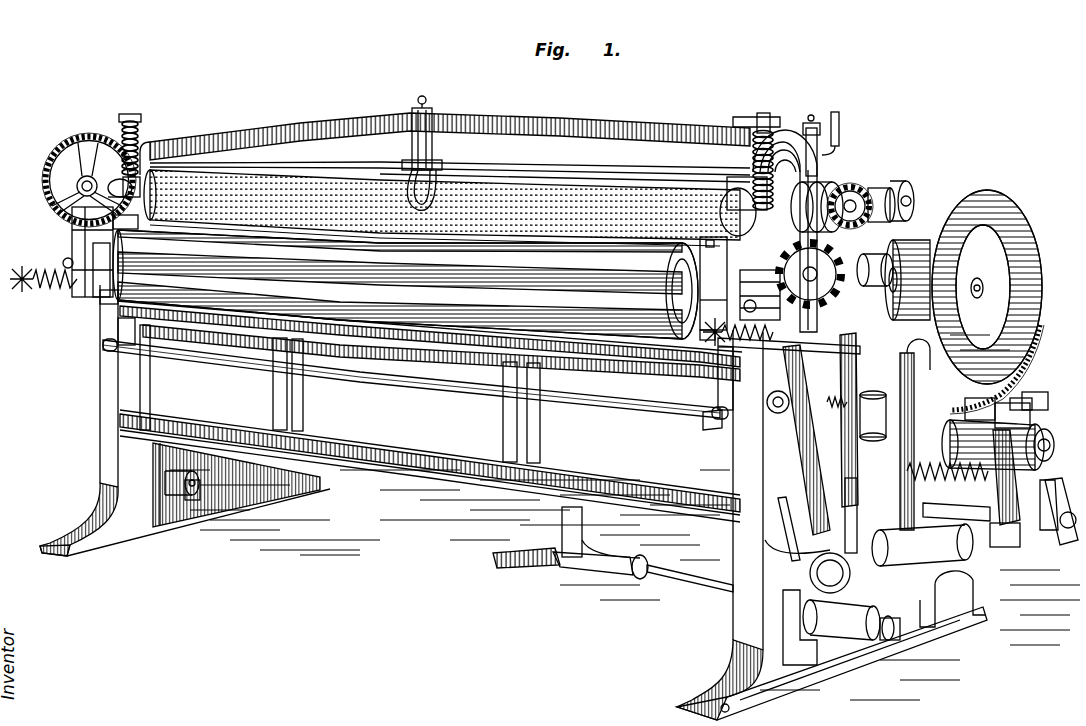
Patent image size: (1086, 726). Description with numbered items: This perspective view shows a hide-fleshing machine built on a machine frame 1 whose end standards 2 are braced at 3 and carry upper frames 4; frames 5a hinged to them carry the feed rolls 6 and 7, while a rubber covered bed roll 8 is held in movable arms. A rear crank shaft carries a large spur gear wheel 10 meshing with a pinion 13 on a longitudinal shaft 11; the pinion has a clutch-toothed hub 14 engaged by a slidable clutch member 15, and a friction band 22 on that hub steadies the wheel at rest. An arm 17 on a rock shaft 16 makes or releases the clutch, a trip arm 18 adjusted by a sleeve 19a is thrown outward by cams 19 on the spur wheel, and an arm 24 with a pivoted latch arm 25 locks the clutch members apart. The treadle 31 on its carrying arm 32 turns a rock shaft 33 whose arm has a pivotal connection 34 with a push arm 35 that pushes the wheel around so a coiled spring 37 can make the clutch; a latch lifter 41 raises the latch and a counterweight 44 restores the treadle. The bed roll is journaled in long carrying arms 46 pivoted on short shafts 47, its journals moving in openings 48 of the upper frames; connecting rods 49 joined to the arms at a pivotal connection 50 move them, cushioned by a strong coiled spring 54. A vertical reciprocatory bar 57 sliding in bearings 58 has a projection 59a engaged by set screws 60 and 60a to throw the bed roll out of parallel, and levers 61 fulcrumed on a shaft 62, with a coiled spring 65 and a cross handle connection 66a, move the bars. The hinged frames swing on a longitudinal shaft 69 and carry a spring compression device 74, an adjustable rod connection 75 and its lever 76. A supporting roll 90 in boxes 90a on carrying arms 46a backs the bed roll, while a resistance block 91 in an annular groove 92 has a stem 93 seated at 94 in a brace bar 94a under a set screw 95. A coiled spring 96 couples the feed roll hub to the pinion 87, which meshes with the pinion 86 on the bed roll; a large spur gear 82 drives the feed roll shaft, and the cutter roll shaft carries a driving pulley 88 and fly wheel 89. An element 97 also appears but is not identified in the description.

The machine frame 1 is at (100, 470).
The end standards 2 is at (100, 393).
The longitudinal brace 3 is at (450, 482).
The upper frames 4 is at (80, 252).
The hinged frames 5a is at (810, 182).
The feed roll 6 is at (205, 172).
The feed roll 7 is at (232, 231).
The rubber covered bed roll 8 is at (117, 335).
The spur gear wheel 10 is at (1036, 345).
The longitudinal shaft 11 is at (1048, 444).
The pinion 13 is at (993, 445).
The clutch-toothed hub 14 is at (965, 484).
The slidable clutch member 15 is at (1040, 422).
The rock shaft 16 is at (1066, 535).
The arm 17 is at (1008, 530).
The trip arm 18 is at (1008, 403).
The cams 19 is at (978, 397).
The sleeve 19a is at (1050, 550).
The friction band 22 is at (1028, 410).
The arm 24 is at (950, 556).
The latch arm 25 is at (800, 505).
The treadle 31 is at (520, 570).
The carrying arm 32 is at (598, 575).
The rock shaft 33 is at (690, 578).
The pivotal connection 34 is at (900, 640).
The push arm 35 is at (880, 645).
The coiled spring 37 is at (956, 514).
The latch lifter 41 is at (850, 540).
The counterweight 44 is at (902, 355).
The carrying arms 46 is at (843, 400).
The carrying arms 46a is at (163, 483).
The short shafts 47 is at (197, 500).
The openings 48 is at (106, 220).
The connecting rods 49 is at (916, 310).
The pivotal connection 50 is at (722, 416).
The coiled spring 54 is at (42, 285).
The vertical reciprocatory bar 57 is at (805, 470).
The sliding bearings 58 is at (827, 537).
The projection 59a is at (868, 262).
The set screw 60 is at (62, 263).
The set screw 60a is at (726, 258).
The levers 61 is at (104, 346).
The shaft 62 is at (772, 410).
The coiled spring 65 is at (840, 402).
The cross handle connection 66a is at (436, 390).
The longitudinal shaft 69 is at (910, 200).
The spring compression device 74 is at (122, 135).
The adjustable pivotal rod connection 75 is at (812, 127).
The lever 76 is at (838, 146).
The large spur gear 82 is at (66, 146).
The pinion 86 is at (718, 390).
The pinion 87 is at (860, 196).
The driving pulley 88 is at (905, 272).
The fly wheel 89 is at (988, 205).
The supporting roll 90 is at (220, 330).
The boxes 90a is at (107, 298).
The resistance block 91 is at (403, 162).
The annular groove 92 is at (428, 201).
The stem 93 is at (432, 186).
The seat 94 is at (431, 122).
The longitudinal brace bar 94a is at (328, 132).
The set screw 95 is at (420, 99).
The coiled spring 96 is at (810, 190).
The cylinder 97 is at (880, 190).